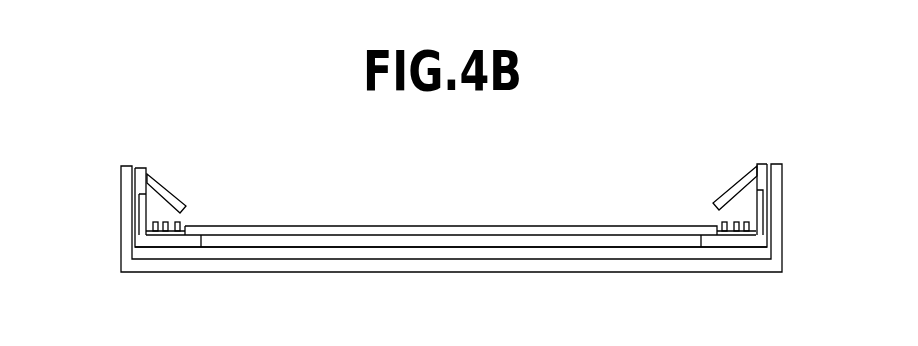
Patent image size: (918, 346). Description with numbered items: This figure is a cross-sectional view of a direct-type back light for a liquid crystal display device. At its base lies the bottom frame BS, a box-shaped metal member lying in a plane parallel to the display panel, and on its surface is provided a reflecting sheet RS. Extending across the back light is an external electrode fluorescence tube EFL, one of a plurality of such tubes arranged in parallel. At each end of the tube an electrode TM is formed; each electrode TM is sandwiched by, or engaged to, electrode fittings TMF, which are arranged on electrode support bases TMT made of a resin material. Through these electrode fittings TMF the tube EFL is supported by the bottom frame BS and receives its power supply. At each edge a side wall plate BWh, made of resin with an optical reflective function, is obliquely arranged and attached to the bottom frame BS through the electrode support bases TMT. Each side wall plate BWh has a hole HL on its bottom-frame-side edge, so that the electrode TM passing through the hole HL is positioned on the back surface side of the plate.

The side wall plate BWh is at (164, 184).
The electrode fitting TMF is at (140, 213).
The electrode support base TMT is at (140, 238).
The electrode TM is at (182, 236).
The hole HL is at (195, 219).
The external electrode fluorescence tube EFL is at (500, 231).
The bottom frame BS is at (430, 262).
The reflecting sheet RS is at (593, 252).